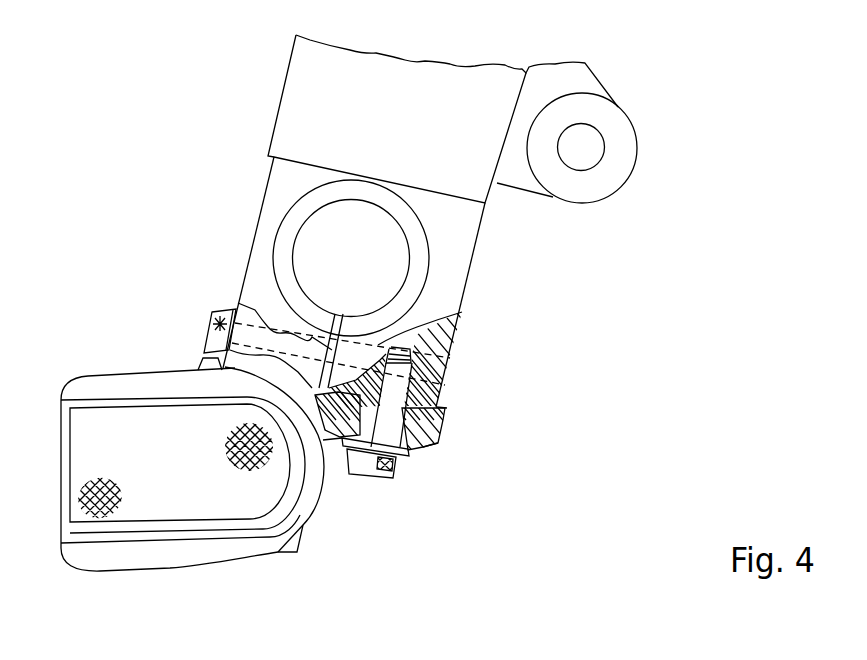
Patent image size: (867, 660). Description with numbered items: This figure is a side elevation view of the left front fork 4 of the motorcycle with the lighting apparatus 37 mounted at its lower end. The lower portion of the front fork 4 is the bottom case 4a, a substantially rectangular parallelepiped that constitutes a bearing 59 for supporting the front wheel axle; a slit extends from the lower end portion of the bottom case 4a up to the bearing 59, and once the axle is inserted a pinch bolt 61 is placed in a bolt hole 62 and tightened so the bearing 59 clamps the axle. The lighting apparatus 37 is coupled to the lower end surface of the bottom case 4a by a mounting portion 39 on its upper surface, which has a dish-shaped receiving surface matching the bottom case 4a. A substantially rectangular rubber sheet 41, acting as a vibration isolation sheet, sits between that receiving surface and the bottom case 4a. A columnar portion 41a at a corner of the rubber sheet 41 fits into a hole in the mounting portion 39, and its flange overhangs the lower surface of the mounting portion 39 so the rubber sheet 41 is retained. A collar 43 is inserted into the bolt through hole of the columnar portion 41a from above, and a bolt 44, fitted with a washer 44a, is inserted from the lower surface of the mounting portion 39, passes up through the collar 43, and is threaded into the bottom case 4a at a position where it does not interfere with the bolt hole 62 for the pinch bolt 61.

The front fork 4 is at (290, 106).
The bottom case 4a is at (267, 194).
The lighting apparatus 37 is at (118, 573).
The mounting portion 39 is at (438, 443).
The rubber sheet 41 is at (443, 425).
The columnar portion 41a is at (422, 445).
The collar 43 is at (443, 417).
The bolt 44 is at (368, 478).
The washer 44a is at (412, 455).
The bearing 59 is at (423, 255).
The pinch bolt 61 is at (205, 348).
The bolt hole 62 is at (235, 307).